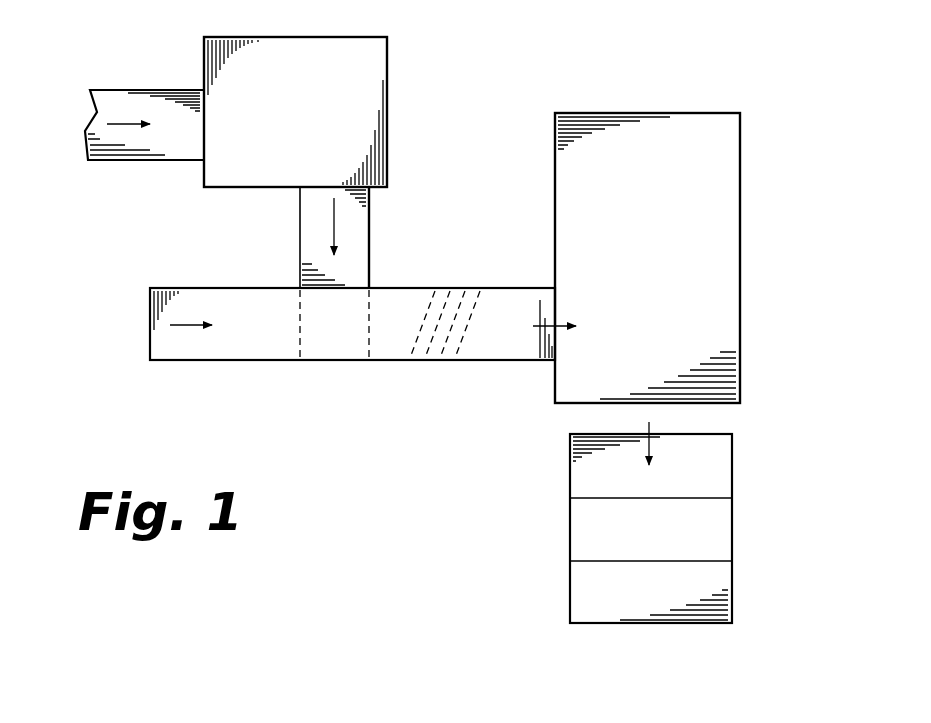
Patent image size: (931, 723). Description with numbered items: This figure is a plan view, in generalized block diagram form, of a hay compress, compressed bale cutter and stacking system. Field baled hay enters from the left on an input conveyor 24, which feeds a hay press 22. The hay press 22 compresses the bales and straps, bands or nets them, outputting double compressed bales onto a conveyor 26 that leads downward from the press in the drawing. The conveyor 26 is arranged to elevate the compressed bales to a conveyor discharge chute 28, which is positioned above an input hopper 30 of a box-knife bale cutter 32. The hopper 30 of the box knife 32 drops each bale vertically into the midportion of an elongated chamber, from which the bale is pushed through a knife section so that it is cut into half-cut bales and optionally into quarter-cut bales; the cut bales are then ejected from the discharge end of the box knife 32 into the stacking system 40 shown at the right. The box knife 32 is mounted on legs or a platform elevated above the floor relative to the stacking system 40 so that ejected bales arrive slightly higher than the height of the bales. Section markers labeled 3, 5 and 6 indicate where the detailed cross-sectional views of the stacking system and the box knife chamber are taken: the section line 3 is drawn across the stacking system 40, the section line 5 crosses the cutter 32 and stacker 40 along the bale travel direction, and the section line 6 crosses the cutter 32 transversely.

The hay press 22 is at (396, 92).
The input conveyor 24 is at (150, 162).
The conveyor 26 is at (300, 213).
The conveyor discharge chute 28 is at (327, 362).
The input hopper 30 is at (424, 356).
The box-knife bale cutter 32 is at (252, 368).
The stacking system 40 is at (748, 290).
The section line 3- 3 is at (797, 93).
The section line 5- 5 is at (127, 385).
The section line 6- 6 is at (545, 263).